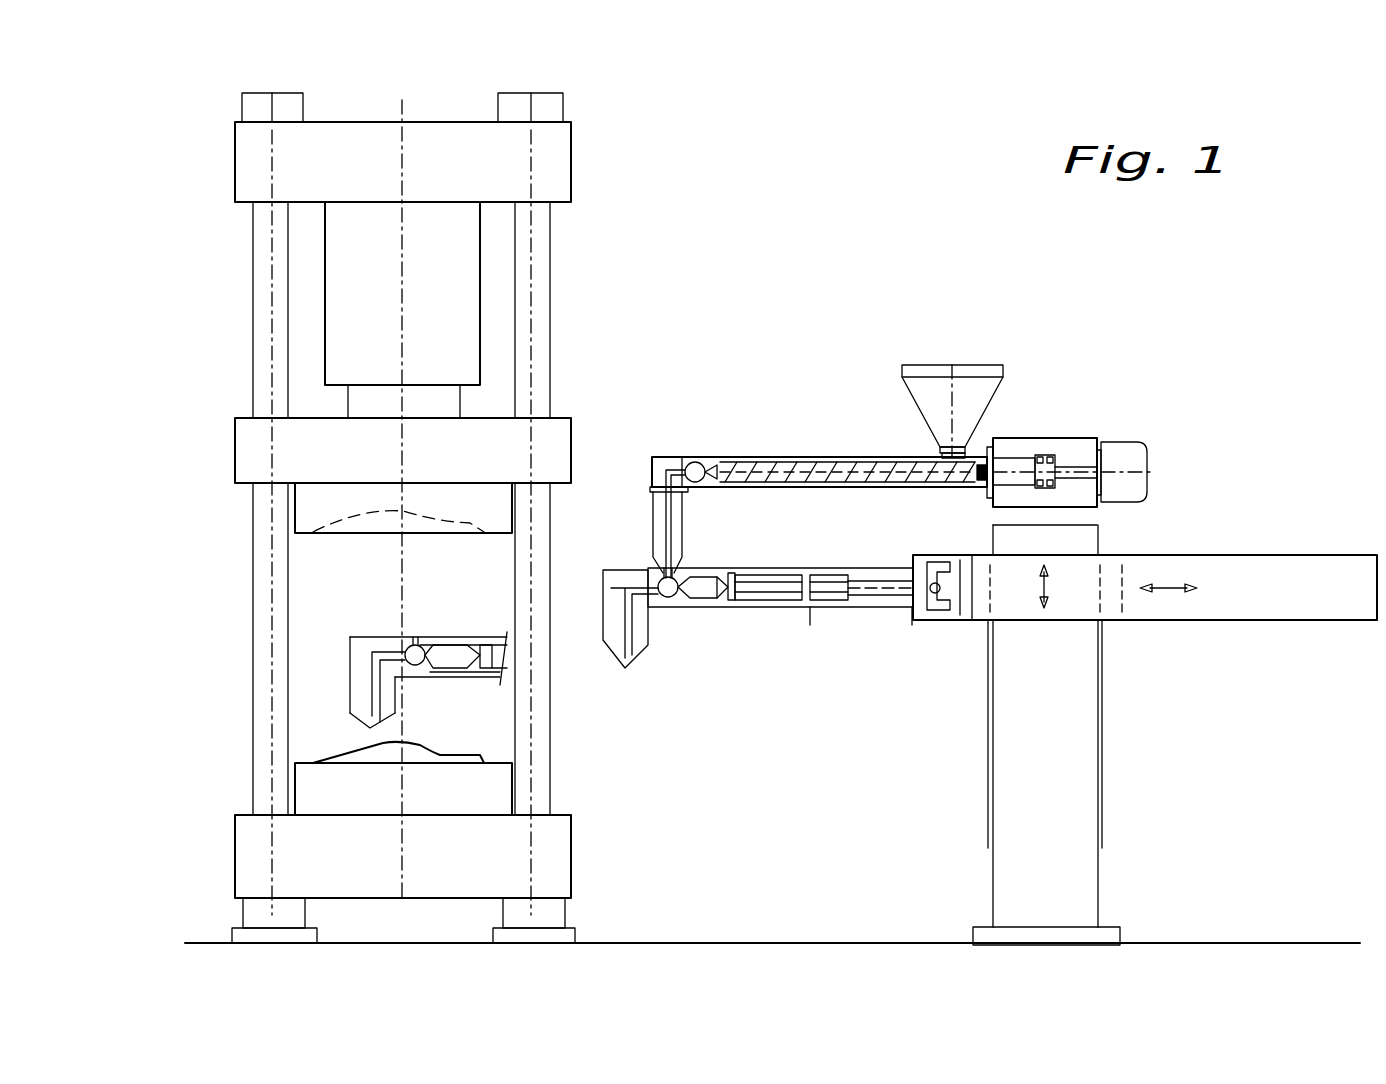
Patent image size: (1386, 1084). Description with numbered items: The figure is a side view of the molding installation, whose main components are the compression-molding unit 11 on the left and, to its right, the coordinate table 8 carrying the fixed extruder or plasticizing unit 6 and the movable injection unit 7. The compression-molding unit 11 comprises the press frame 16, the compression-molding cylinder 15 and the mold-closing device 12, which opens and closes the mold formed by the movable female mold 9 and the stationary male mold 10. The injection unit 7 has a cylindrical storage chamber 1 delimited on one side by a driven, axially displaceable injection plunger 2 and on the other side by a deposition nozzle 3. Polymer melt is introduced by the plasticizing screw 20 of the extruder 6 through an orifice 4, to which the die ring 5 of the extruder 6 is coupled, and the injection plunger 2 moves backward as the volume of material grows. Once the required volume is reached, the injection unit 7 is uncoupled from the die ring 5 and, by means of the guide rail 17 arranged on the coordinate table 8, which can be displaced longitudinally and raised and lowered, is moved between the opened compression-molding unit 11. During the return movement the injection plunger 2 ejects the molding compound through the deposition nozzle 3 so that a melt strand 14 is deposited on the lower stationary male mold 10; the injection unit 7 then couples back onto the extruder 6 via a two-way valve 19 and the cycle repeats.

The cylindrical storage chamber 1 is at (702, 593).
The injection plunger 2 is at (732, 595).
The deposition nozzle 3 is at (640, 640).
The orifice 4 is at (662, 568).
The die ring 5 is at (660, 530).
The extruder or plasticizing unit 6 is at (720, 434).
The injection unit 7 is at (864, 668).
The coordinate table 8 is at (1083, 667).
The movable female mold 9 is at (320, 502).
The stationary male mold 10 is at (320, 788).
The compression-molding unit 11 is at (652, 206).
The mold-closing device 12 is at (547, 451).
The melt strand 14 is at (367, 745).
The compression-molding cylinder 15 is at (438, 328).
The press frame 16 is at (252, 178).
The guide rail 17 is at (1225, 597).
The two-way valve 19 is at (675, 598).
The plasticizing screw 20 is at (810, 477).